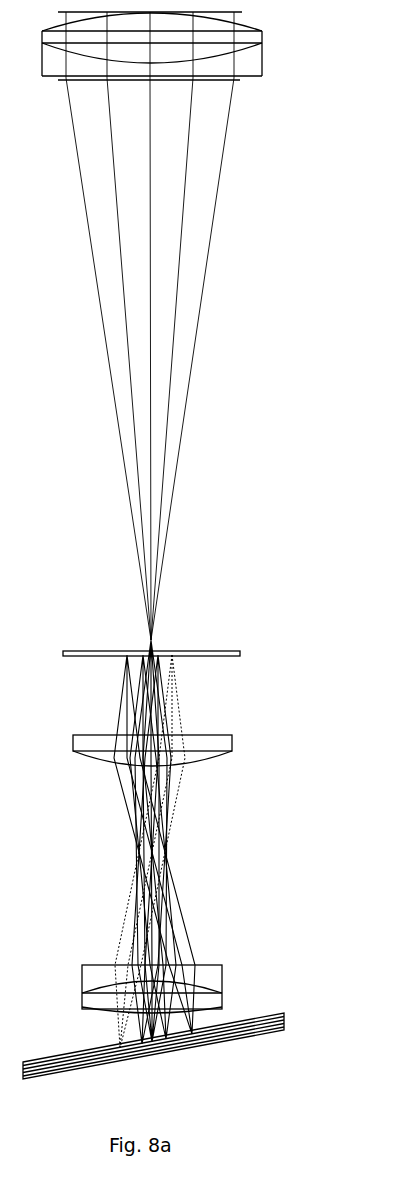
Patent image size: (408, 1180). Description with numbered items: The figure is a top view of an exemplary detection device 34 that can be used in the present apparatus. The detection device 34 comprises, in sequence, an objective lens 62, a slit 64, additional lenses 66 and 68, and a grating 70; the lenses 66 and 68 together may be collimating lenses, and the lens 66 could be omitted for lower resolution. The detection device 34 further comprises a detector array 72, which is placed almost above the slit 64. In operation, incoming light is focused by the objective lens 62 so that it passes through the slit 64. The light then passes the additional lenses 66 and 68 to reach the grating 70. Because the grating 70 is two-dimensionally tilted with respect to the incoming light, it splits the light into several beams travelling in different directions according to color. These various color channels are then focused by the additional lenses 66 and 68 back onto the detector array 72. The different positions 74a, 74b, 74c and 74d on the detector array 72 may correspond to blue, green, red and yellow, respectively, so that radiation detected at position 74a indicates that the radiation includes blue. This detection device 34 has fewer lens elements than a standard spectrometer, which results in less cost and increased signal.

The objective lens 62 is at (262, 76).
The detection device 34 is at (231, 550).
The slit 64 is at (152, 640).
The position on the detector array 74a is at (128, 649).
The position on the detector array 74b is at (142, 648).
The position on the detector array 74c is at (158, 649).
The position on the detector array 74d is at (173, 648).
The detector array 72 is at (217, 652).
The additional lens 66 is at (214, 739).
The additional lens 68 is at (215, 981).
The grating 70 is at (240, 1028).